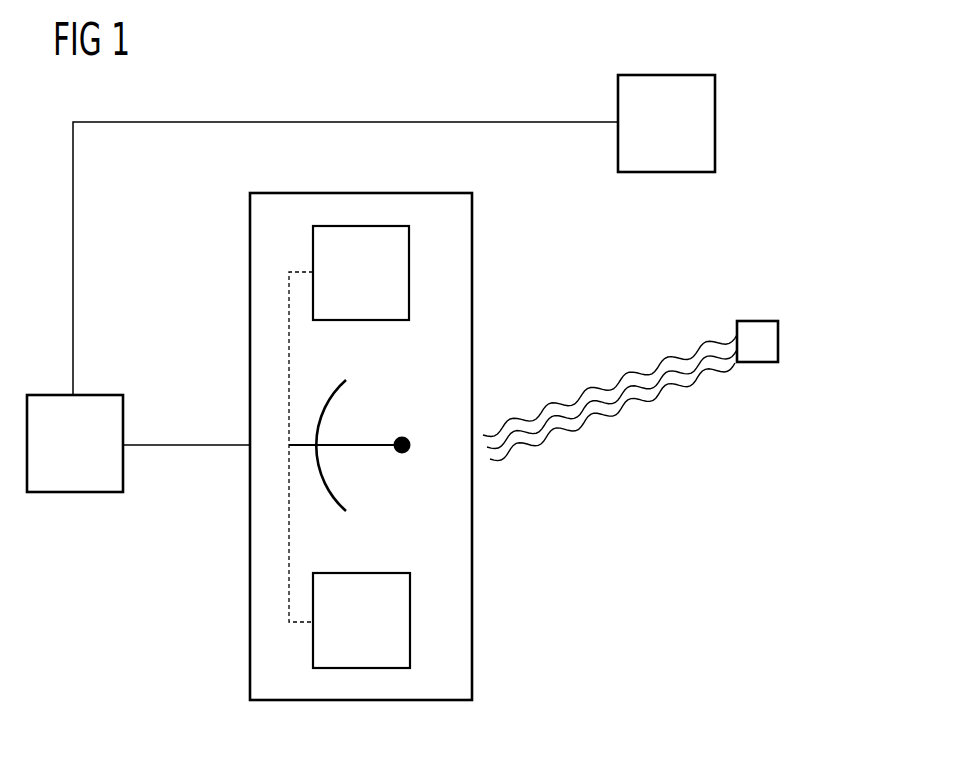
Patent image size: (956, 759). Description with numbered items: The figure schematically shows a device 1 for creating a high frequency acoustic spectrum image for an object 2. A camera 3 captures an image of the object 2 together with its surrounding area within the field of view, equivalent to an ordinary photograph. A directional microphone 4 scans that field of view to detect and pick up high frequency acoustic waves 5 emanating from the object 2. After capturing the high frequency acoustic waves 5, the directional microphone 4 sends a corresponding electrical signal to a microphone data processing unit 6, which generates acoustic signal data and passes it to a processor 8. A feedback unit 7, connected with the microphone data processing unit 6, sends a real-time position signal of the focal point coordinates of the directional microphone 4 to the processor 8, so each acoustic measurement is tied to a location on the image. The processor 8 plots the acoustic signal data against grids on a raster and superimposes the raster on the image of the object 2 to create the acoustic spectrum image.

The device 1 is at (455, 58).
The object 2 is at (757, 337).
The camera 3 is at (659, 138).
The directional microphone 4 is at (317, 420).
The high frequency acoustic waves 5 is at (513, 444).
The microphone data processing unit 6 is at (354, 286).
The feedback unit 7 is at (354, 634).
The processor 8 is at (67, 458).